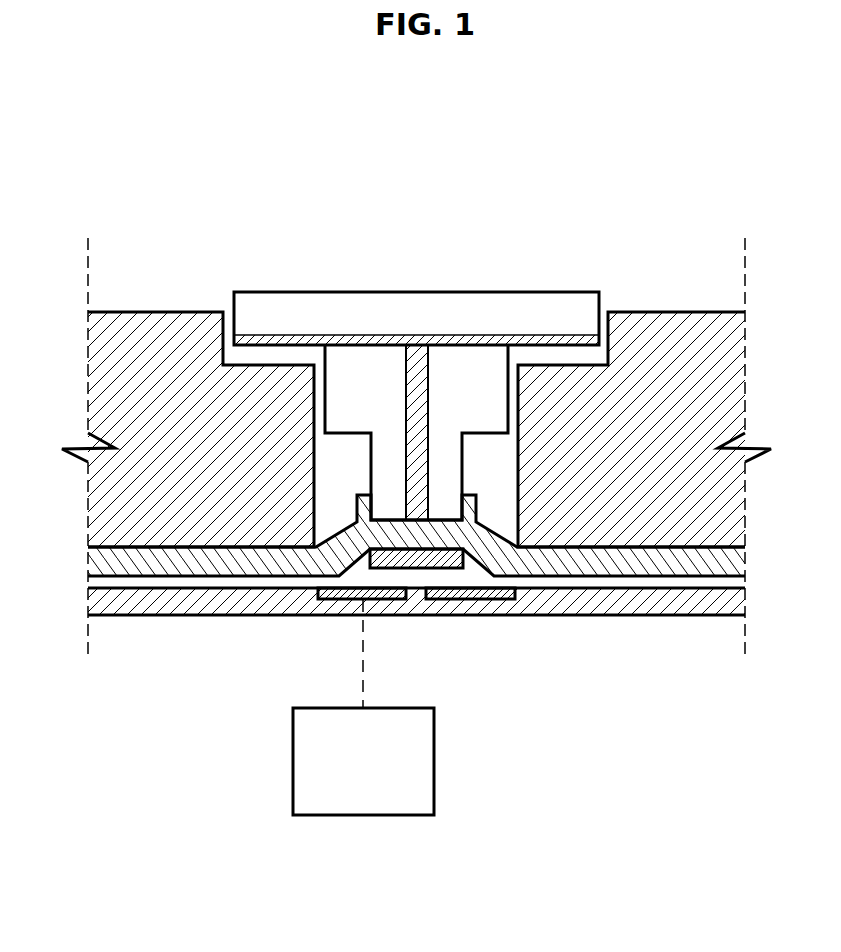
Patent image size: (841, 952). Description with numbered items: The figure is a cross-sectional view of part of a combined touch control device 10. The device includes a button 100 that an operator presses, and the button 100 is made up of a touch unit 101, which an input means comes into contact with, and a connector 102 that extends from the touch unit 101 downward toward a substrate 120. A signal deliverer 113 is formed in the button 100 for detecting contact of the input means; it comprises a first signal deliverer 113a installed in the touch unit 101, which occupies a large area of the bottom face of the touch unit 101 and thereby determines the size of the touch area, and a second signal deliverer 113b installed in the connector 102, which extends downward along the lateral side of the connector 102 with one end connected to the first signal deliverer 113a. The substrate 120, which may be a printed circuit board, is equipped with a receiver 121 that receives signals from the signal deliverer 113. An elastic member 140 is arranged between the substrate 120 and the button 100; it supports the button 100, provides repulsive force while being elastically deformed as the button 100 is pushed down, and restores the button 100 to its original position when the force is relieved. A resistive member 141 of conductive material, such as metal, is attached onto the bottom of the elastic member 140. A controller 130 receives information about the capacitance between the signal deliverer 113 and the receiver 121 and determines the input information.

The combined touch control device 10 is at (259, 137).
The button 100 is at (570, 281).
The touch unit 101 is at (521, 298).
The connector 102 is at (477, 358).
The signal deliverer 113 is at (414, 347).
The first signal deliverer 113a is at (254, 335).
The second signal deliverer 113b is at (417, 348).
The substrate 120 is at (583, 602).
The receiver 121 is at (490, 596).
The controller 130 is at (398, 815).
The elastic member 140 is at (232, 560).
The resistive member 141 is at (420, 556).